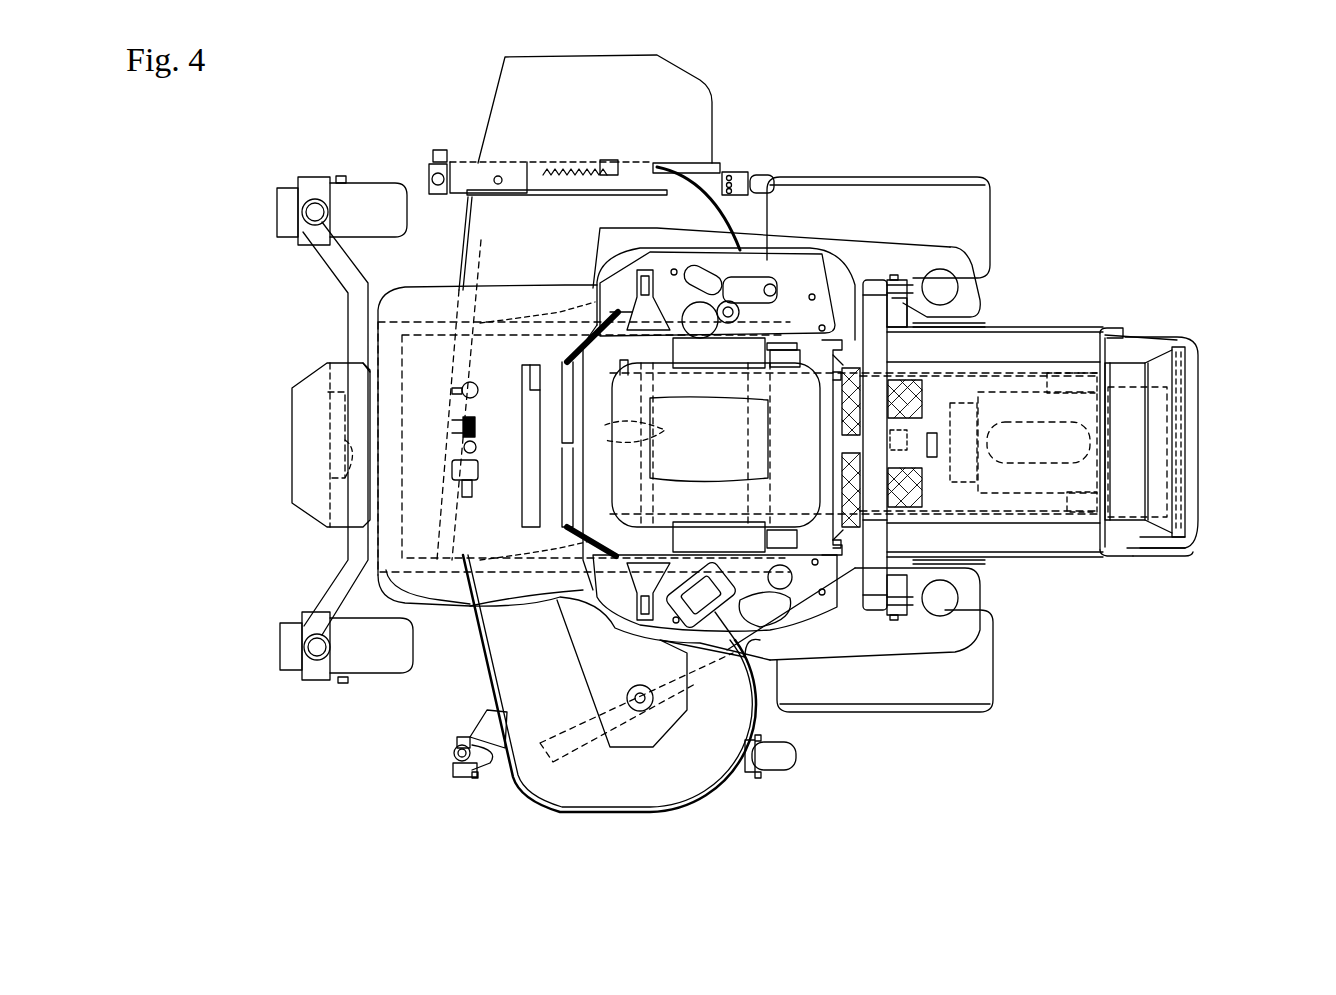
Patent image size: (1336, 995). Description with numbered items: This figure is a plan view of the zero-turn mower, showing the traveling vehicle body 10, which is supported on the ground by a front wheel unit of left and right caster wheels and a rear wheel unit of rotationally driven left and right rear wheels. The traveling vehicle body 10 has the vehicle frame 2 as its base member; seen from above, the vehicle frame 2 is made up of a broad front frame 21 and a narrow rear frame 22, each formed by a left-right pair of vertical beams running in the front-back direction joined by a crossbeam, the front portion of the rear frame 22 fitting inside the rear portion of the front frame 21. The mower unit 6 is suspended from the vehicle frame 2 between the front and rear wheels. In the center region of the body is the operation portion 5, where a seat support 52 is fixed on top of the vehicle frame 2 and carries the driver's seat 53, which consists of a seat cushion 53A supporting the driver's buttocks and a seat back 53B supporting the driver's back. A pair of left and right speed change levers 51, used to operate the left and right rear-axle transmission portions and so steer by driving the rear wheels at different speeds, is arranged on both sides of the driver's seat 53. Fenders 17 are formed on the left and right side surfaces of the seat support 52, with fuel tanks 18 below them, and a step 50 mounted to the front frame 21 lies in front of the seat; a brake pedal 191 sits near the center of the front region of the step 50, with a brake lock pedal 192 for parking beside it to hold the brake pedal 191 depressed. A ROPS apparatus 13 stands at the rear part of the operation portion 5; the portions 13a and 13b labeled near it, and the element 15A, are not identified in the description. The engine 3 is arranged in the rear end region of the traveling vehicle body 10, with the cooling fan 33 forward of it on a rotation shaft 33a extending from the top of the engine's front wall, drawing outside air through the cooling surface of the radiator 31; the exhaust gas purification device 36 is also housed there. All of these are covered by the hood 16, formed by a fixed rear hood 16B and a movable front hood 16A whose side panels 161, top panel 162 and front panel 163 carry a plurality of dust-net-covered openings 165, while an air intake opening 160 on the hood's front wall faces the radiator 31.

The vehicle frame 2 is at (422, 315).
The engine 3 is at (1095, 560).
The operation portion 5 is at (643, 240).
The mower unit 6 is at (470, 678).
The traveling vehicle body 10 is at (308, 322).
The ROPS apparatus 13 is at (880, 270).
The post bracket 13a is at (905, 290).
The post base 13b is at (880, 533).
The front cover 15A is at (300, 452).
The hood 16 is at (1193, 272).
The movable hood 16A is at (1090, 330).
The fixed hood 16B is at (1158, 340).
The fenders 17 is at (597, 281).
The fuel tanks 18 is at (935, 247).
The front frame 21 is at (457, 603).
The rear frame 22 is at (1048, 373).
The radiator 31 is at (930, 420).
The cooling fan 33 is at (955, 480).
The rotation shaft 33a is at (965, 440).
The exhaust gas purification device 36 is at (1162, 520).
The step 50 is at (510, 598).
The speed change levers 51 is at (590, 335).
The seat support 52 is at (828, 336).
The driver's seat 53 is at (597, 385).
The seat cushion 53A is at (577, 562).
The seat back 53B is at (797, 632).
The air intake opening 160 is at (790, 380).
The side panels 161 is at (1010, 330).
The top panel 162 is at (1090, 410).
The front panel 163 is at (835, 443).
The openings 165 is at (850, 545).
The brake pedal 191 is at (480, 425).
The brake lock pedal 192 is at (478, 490).